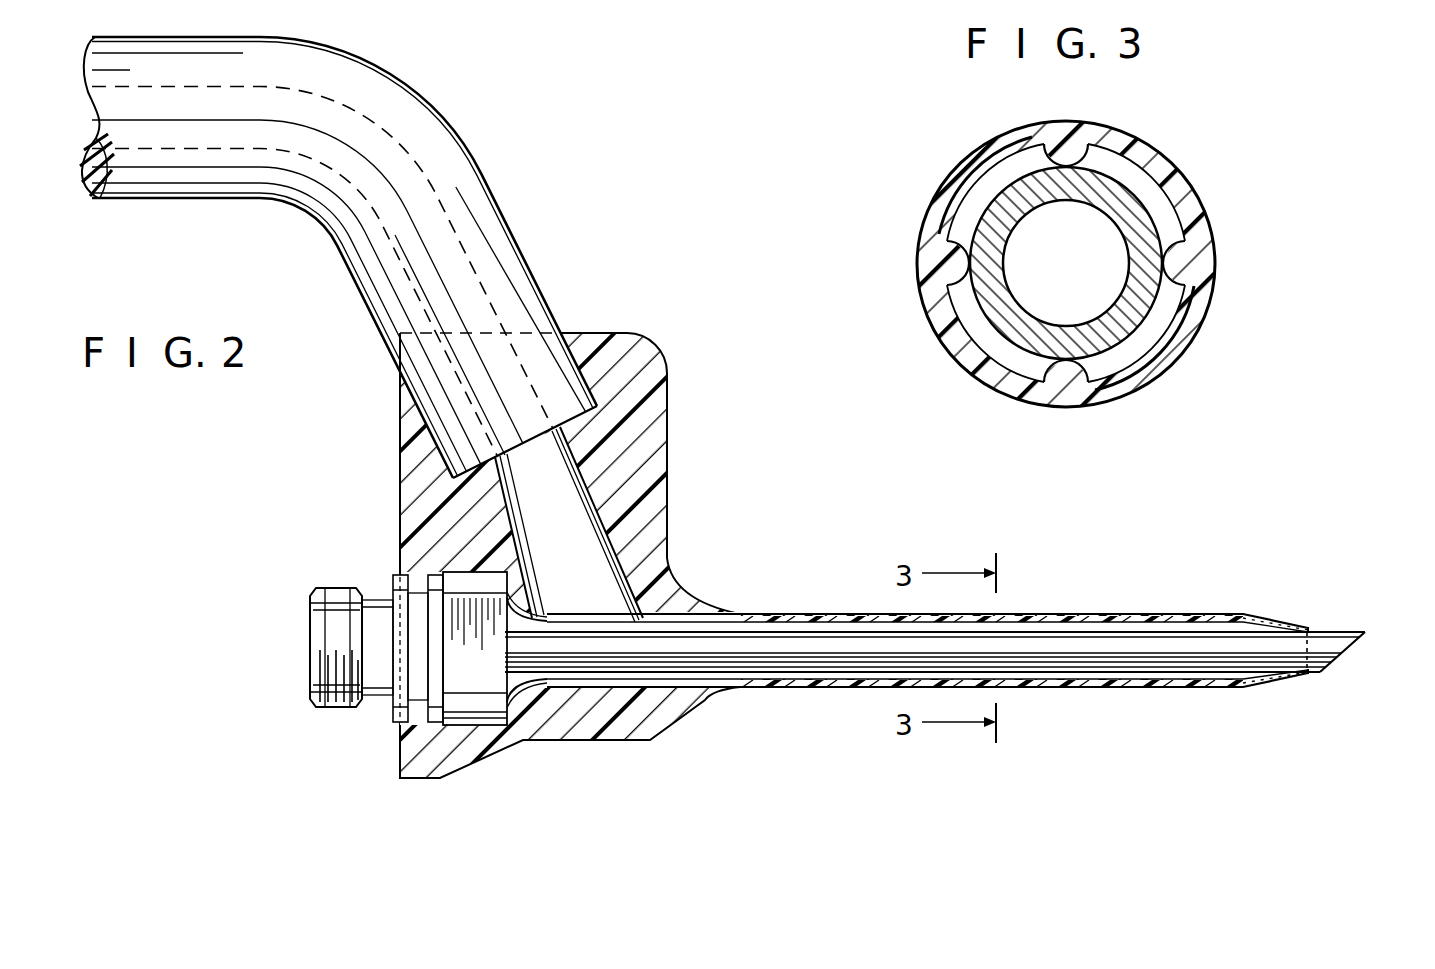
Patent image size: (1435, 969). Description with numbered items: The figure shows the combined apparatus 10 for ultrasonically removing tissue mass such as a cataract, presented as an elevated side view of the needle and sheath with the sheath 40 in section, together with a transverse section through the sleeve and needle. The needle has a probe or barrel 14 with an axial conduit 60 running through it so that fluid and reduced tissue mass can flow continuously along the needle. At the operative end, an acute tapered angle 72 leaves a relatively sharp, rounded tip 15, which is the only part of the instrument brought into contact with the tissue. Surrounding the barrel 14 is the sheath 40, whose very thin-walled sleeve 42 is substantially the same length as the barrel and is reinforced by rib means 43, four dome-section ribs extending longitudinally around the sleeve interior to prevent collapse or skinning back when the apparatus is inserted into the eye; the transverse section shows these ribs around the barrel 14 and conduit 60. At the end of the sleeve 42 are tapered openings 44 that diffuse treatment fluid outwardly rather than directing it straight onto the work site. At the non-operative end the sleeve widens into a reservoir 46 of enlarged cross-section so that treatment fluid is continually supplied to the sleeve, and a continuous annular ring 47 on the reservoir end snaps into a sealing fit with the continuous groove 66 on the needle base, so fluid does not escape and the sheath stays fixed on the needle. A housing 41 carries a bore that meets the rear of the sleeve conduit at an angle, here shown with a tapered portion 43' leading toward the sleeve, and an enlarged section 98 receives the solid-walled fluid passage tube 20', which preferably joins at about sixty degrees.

In FIG. 2, the combined apparatus 10 is at (631, 812).
In FIG. 2, the barrel 14 is at (1082, 643).
In FIG. 3, the barrel 14 is at (1147, 220).
In FIG. 2, the tip 15 is at (1365, 631).
In FIG. 2, the solid-walled tube 20' is at (338, 257).
In FIG. 2, the sheath 40 is at (692, 503).
In FIG. 2, the housing 41 is at (652, 443).
In FIG. 2, the sleeve 42 is at (1088, 614).
In FIG. 3, the sleeve 42 is at (1170, 330).
In FIG. 2, the rib means 43 is at (927, 658).
In FIG. 3, the rib means 43 is at (1069, 262).
In FIG. 2, the tapered sleeve portion 43' is at (623, 524).
In FIG. 2, the openings 44 is at (1258, 624).
In FIG. 2, the reservoir 46 is at (455, 575).
In FIG. 2, the annular ring 47 is at (418, 592).
In FIG. 3, the conduit 60 is at (1033, 283).
In FIG. 2, the groove 66 is at (406, 723).
In FIG. 2, the acute tapered angle 72 is at (1353, 648).
In FIG. 2, the enlarged section 98 is at (406, 386).